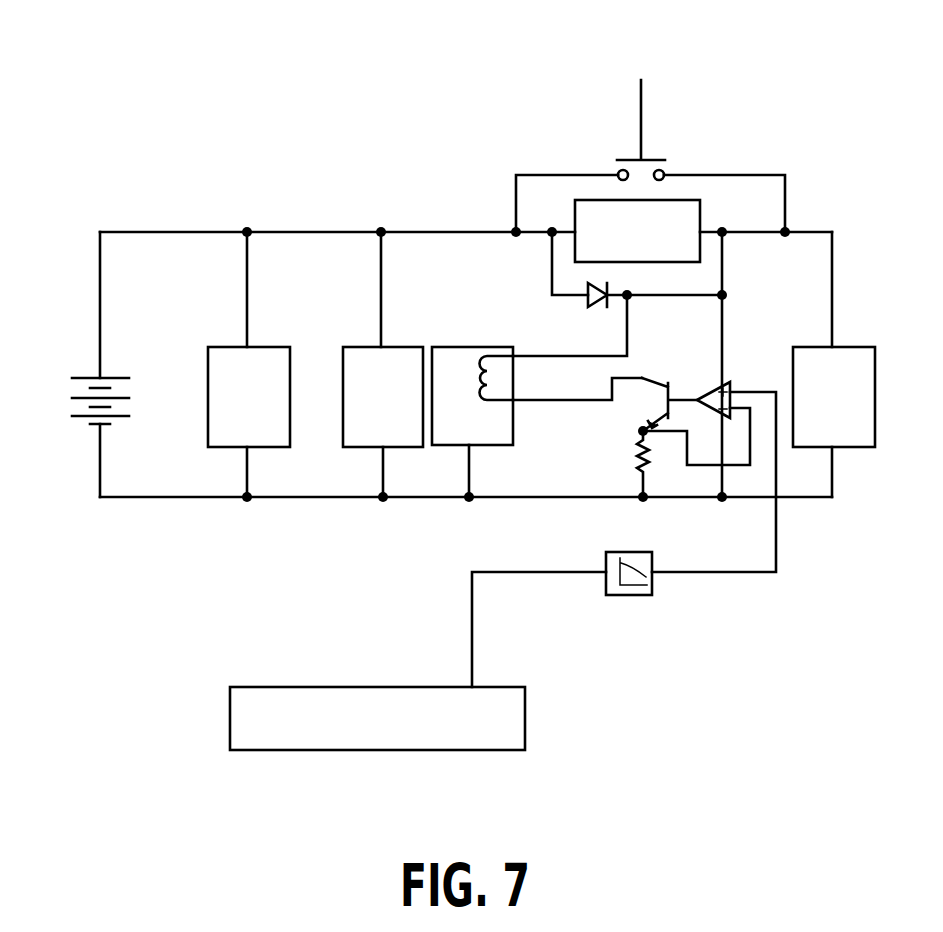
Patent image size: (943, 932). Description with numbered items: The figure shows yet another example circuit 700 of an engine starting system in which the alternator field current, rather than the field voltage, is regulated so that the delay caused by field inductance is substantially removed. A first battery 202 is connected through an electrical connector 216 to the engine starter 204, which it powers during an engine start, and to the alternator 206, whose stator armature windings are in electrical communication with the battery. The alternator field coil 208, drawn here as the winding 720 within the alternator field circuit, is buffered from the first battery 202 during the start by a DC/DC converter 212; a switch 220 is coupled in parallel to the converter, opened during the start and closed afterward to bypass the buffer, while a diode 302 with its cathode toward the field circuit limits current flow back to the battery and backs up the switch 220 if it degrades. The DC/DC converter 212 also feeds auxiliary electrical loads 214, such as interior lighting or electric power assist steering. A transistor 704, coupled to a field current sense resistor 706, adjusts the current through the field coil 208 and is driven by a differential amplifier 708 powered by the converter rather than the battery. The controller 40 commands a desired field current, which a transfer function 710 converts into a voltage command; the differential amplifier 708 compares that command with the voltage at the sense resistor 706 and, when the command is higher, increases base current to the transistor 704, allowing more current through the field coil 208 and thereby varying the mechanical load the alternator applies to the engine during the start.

The circuit 700 is at (775, 60).
The first battery 202 is at (112, 378).
The engine starter 204 is at (233, 414).
The alternator 206 is at (367, 414).
The alternator field coil 208 is at (456, 435).
The DC/DC converter 212 is at (621, 244).
The auxiliary electrical loads 214 is at (818, 414).
The electrical connector 216 is at (194, 230).
The switch 220 is at (642, 145).
The diode 302 is at (600, 307).
The transistor 704 is at (653, 382).
The field current sense resistor 706 is at (637, 447).
The differential amplifier 708 is at (730, 384).
The transfer function 710 is at (628, 552).
The coil 720 is at (527, 353).
The controller 40 is at (433, 731).